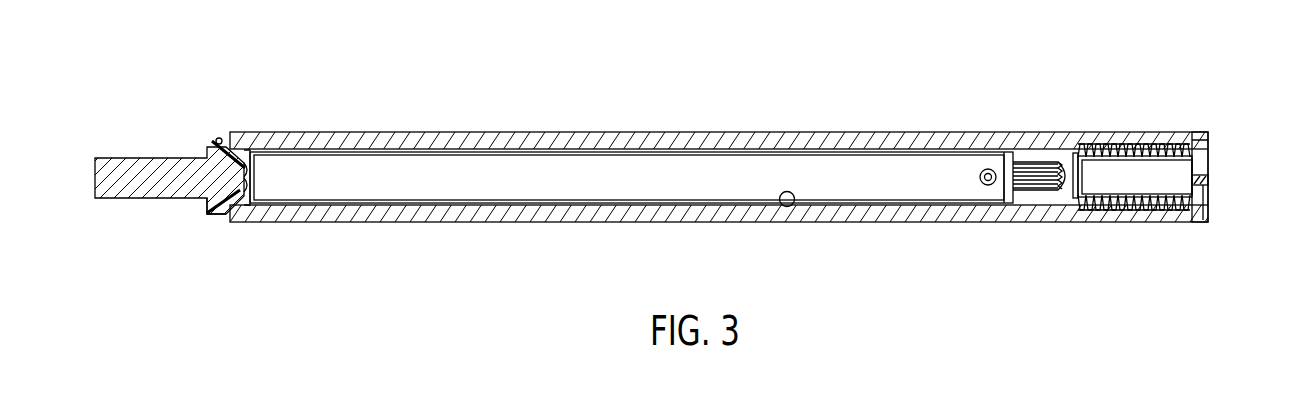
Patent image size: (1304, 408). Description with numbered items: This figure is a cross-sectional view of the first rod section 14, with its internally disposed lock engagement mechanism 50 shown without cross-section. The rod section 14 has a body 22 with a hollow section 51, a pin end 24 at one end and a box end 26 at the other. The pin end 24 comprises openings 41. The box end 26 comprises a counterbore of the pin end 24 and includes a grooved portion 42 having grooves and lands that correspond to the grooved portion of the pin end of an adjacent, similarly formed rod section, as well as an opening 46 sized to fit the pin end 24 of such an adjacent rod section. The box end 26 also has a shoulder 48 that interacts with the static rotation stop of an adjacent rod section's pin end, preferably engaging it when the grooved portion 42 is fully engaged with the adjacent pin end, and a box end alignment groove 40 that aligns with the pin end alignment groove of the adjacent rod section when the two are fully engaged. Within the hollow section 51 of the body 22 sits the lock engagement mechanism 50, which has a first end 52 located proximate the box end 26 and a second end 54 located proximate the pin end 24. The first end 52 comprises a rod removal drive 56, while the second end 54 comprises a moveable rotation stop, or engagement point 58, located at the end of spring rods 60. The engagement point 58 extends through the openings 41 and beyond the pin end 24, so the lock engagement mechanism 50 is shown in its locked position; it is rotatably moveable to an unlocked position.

The first rod section 14 is at (528, 96).
The body 22 is at (637, 131).
The pin end 24 is at (140, 158).
The box end 26 is at (1190, 223).
The box end alignment groove 40 is at (1110, 177).
The openings 41 is at (227, 217).
The grooved portion 42 is at (1172, 131).
The opening 46 is at (1211, 204).
The shoulder 48 is at (1207, 177).
The lock engagement mechanism 50 is at (782, 173).
The hollow section 51 is at (783, 200).
The first end 52 is at (1078, 152).
The second end 54 is at (243, 150).
The rod removal drive 56 is at (1028, 165).
The engagement point 58 is at (215, 140).
The spring rods 60 is at (240, 213).